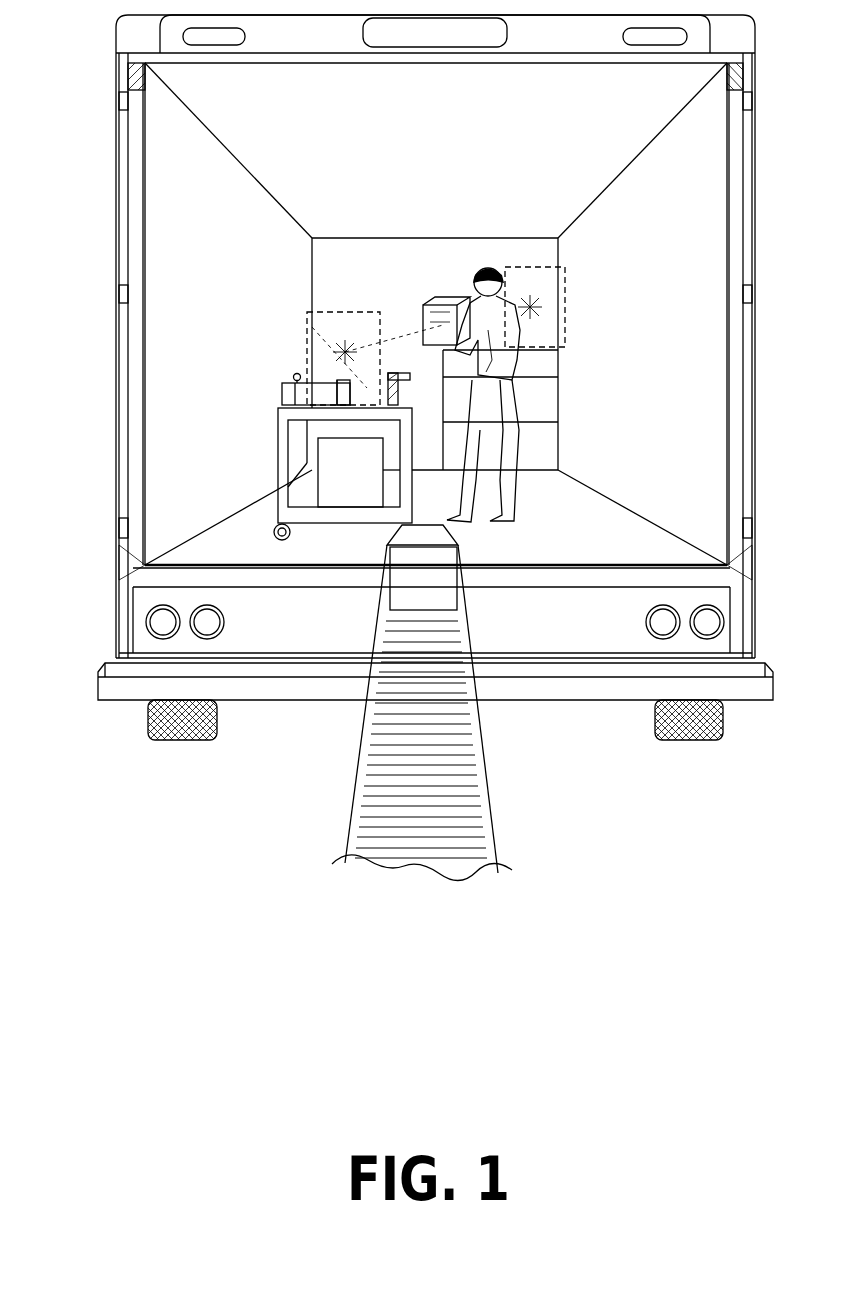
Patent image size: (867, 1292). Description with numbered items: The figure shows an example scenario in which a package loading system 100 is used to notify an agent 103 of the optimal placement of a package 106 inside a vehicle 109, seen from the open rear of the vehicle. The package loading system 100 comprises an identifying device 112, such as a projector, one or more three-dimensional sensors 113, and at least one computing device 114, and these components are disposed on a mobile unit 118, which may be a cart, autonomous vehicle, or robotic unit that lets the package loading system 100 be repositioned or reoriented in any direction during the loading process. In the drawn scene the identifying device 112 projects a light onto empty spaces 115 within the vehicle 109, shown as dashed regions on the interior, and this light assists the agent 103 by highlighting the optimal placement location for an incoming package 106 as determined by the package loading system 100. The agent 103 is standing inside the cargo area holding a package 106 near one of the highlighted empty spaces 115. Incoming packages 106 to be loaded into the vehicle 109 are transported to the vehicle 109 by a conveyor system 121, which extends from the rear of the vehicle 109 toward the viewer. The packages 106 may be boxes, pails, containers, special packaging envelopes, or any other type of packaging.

The package loading system 100 is at (268, 463).
The agent 103 is at (505, 346).
The package 106 is at (445, 303).
The vehicle 109 is at (115, 383).
The identifying device 112 is at (290, 392).
The 3D sensor 113 is at (296, 379).
The computing device 114 is at (366, 487).
The empty spaces 115 is at (308, 328).
The mobile unit 118 is at (382, 515).
The conveyor system 121 is at (356, 800).